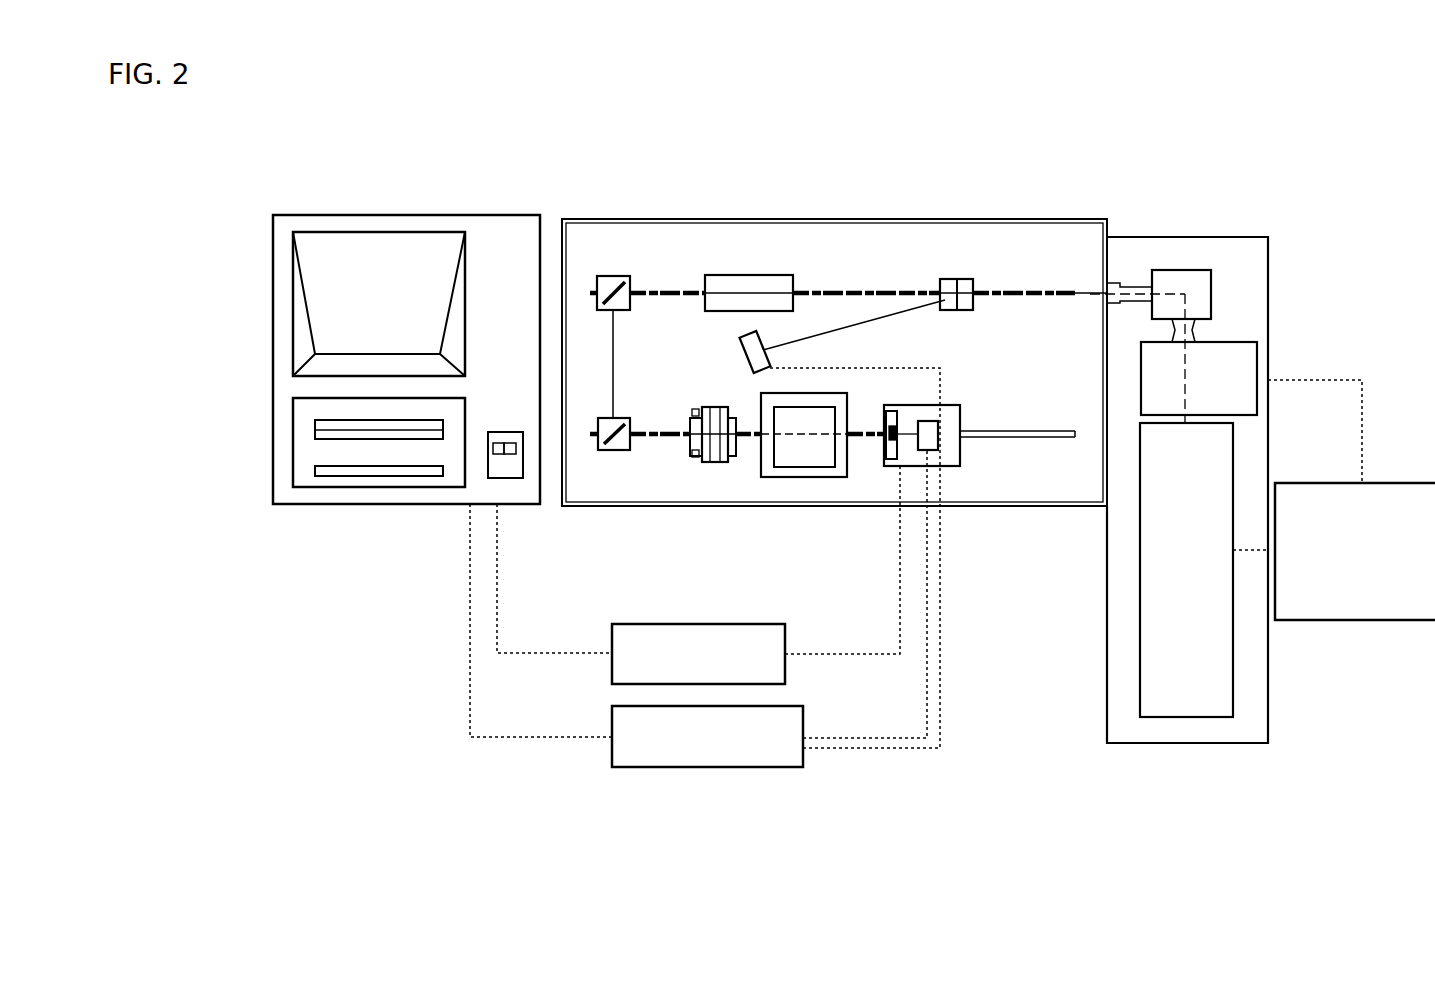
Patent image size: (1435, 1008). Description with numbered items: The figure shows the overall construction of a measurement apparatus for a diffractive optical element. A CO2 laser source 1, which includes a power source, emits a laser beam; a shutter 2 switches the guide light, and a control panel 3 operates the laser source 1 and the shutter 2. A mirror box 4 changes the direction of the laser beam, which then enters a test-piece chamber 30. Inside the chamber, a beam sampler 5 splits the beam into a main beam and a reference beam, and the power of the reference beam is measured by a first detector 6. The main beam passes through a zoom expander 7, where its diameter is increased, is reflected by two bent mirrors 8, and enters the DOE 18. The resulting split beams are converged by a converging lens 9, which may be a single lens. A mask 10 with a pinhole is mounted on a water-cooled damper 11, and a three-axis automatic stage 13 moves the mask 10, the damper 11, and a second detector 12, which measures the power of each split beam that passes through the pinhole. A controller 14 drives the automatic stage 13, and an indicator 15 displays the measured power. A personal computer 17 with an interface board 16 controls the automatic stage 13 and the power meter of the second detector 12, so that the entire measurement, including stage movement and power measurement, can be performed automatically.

The CO2 laser source 1 is at (1196, 598).
The shutter 2 is at (1238, 357).
The control panel 3 is at (1334, 500).
The mirror box 4 is at (1197, 305).
The beam sampler 5 is at (970, 279).
The first detector 6 is at (834, 337).
The zoom expander 7 is at (745, 275).
The bent mirrors 8 is at (613, 276).
The converging lens 9 is at (808, 477).
The mask 10 is at (898, 414).
The water-cooled damper 11 is at (893, 443).
The second detector 12 is at (937, 449).
The three-axis automatic stage 13 is at (950, 420).
The controller 14 is at (698, 575).
The indicator 15 is at (705, 567).
The interface board 16 is at (493, 472).
The personal computer 17 is at (338, 488).
The DOE 18 is at (722, 462).
The test-piece chamber 30 is at (1098, 219).